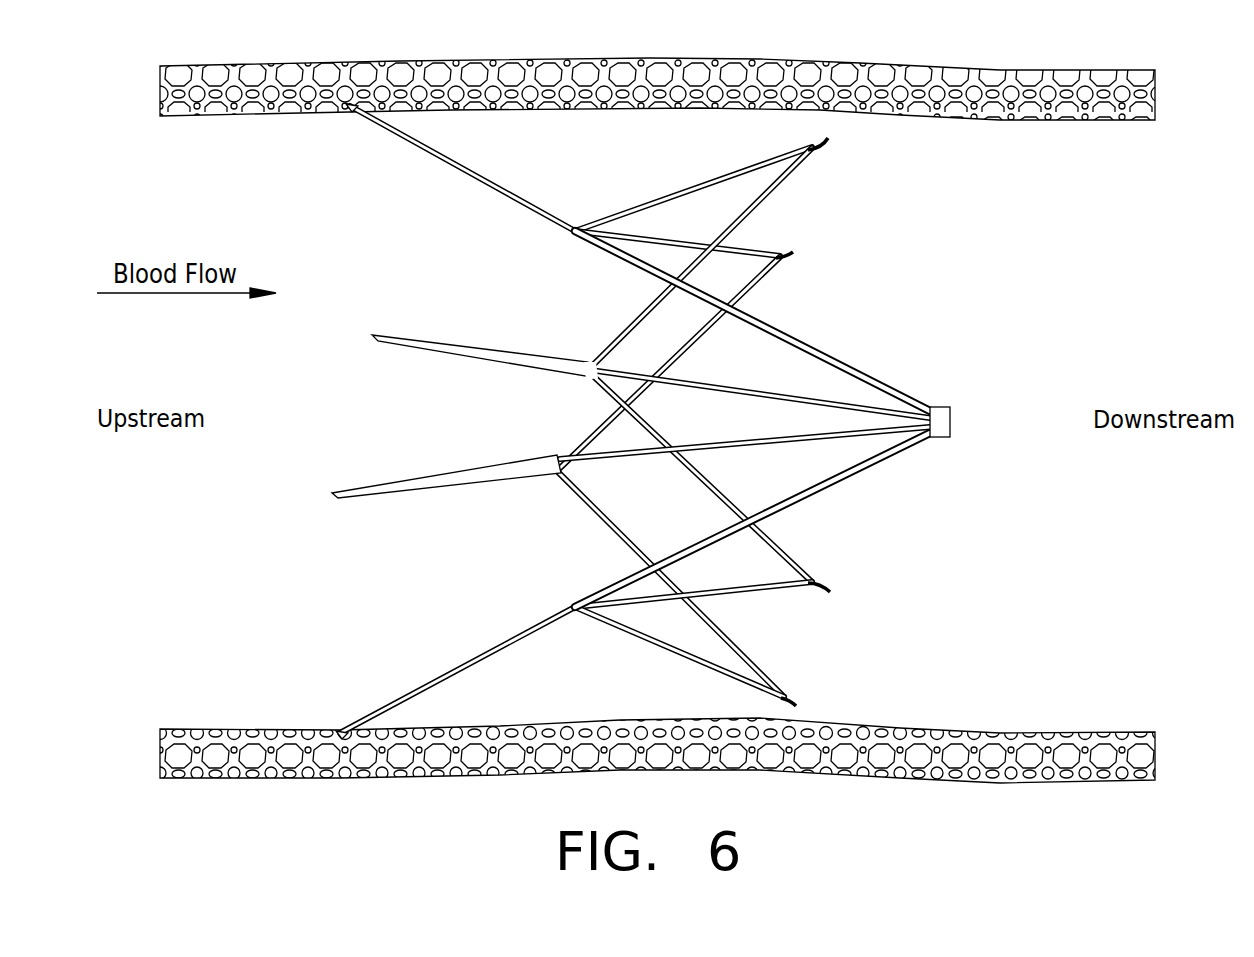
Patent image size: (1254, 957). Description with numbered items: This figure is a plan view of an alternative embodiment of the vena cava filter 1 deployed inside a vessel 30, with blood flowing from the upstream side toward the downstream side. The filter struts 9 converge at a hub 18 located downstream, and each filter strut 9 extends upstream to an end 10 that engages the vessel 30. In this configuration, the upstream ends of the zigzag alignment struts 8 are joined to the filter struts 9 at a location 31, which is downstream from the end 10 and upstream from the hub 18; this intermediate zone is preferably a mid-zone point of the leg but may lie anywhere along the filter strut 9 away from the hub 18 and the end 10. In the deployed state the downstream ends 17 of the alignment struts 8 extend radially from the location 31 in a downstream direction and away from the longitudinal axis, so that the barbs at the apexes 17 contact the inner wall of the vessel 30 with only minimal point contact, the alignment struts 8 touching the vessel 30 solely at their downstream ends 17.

The vena cava filter 1 is at (938, 271).
The zigzag alignment struts 8 is at (694, 487).
The filter struts 9 is at (515, 190).
The end 10 is at (350, 108).
The downstream ends 17 is at (818, 688).
The hub 18 is at (938, 440).
The vessel 30 is at (855, 113).
The location 31 is at (582, 356).